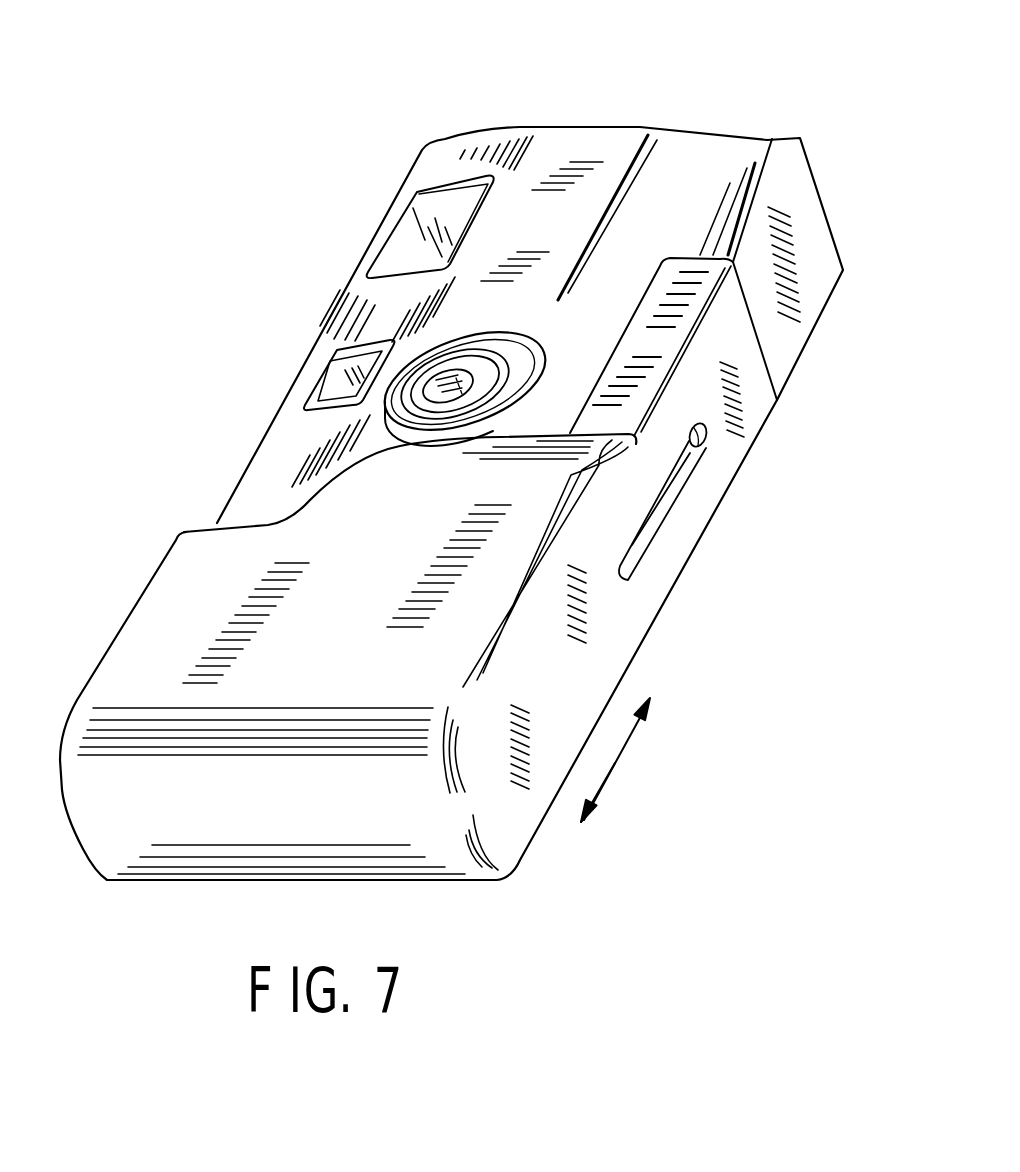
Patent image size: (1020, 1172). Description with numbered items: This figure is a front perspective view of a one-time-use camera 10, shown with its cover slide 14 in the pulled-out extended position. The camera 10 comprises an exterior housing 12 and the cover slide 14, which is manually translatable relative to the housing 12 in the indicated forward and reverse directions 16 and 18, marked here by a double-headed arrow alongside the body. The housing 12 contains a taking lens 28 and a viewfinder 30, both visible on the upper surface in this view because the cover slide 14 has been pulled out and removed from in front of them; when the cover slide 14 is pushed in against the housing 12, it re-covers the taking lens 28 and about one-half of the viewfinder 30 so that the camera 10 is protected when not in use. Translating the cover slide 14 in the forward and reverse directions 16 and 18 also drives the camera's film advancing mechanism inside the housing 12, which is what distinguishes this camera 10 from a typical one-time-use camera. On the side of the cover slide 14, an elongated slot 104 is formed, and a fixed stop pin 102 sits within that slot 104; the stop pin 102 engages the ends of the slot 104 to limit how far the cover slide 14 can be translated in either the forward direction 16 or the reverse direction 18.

The one-time-use camera 10 is at (118, 545).
The exterior housing 12 is at (710, 148).
The cover slide 14 is at (343, 643).
The forward direction 16 is at (598, 802).
The reverse direction 18 is at (652, 702).
The taking lens 28 is at (442, 382).
The viewfinder 30 is at (333, 388).
The fixed stop pin 102 is at (704, 438).
The slot 104 is at (655, 505).